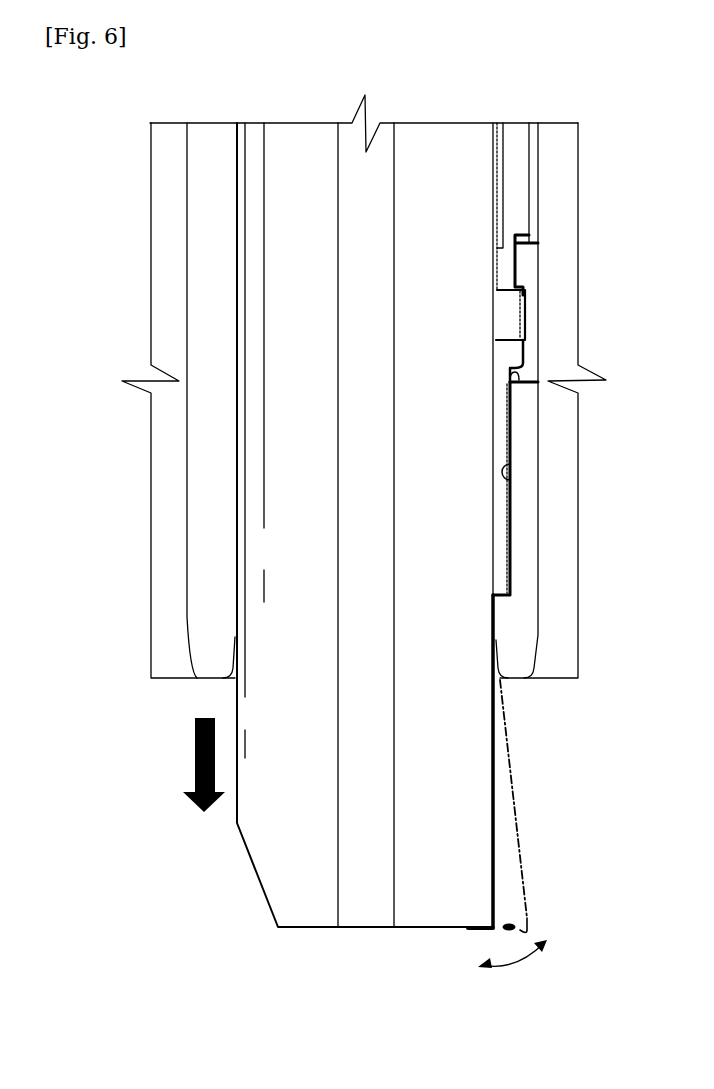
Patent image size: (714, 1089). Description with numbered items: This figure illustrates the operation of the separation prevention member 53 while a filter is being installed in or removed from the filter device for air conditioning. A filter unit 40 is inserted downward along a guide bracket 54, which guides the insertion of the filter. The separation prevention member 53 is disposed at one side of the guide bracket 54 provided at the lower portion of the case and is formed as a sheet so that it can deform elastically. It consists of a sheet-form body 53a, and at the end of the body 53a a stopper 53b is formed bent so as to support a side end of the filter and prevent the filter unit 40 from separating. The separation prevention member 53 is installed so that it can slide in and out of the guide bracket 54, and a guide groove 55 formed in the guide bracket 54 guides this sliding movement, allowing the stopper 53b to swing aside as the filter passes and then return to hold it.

The filter unit 40 is at (373, 943).
The guide bracket 54 is at (207, 575).
The guide groove 55 is at (511, 486).
The separation prevention member 53 is at (612, 840).
The body 53a is at (518, 843).
The stopper 53b is at (516, 929).